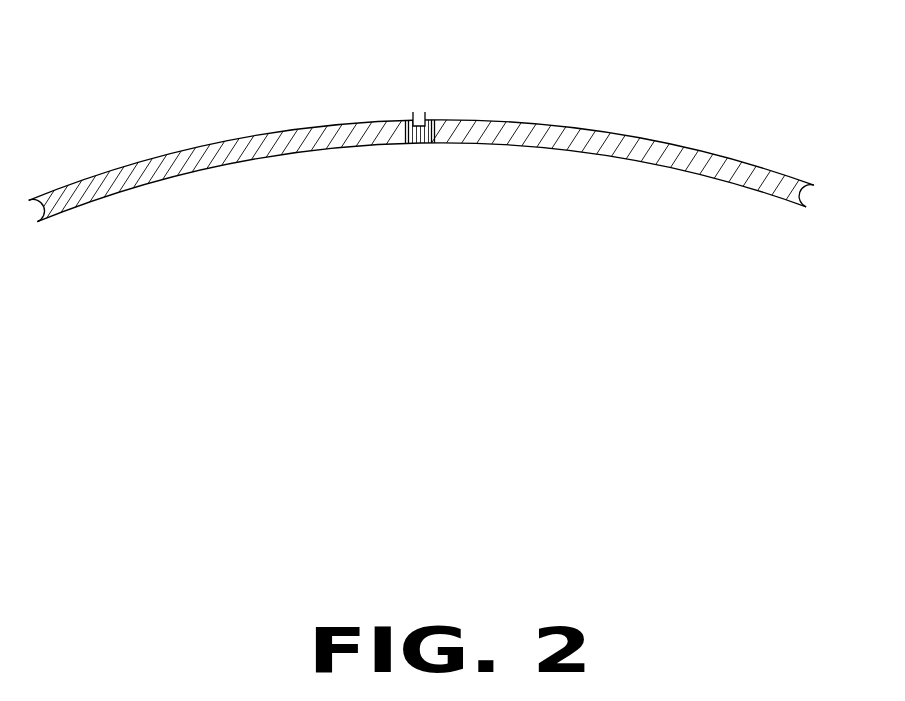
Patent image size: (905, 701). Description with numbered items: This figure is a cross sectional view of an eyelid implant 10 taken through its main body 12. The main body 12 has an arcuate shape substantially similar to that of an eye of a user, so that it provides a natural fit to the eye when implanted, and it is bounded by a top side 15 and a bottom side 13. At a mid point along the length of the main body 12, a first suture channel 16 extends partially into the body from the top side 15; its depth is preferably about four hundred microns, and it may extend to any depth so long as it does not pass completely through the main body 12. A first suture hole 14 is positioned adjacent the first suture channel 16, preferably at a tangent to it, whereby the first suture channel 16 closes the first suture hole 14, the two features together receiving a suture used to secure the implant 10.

The eyelid implant 10 is at (421, 169).
The main body 12 is at (375, 137).
The bottom side 13 is at (645, 167).
The first suture hole 14 is at (422, 143).
The top side 15 is at (555, 125).
The first suture channel 16 is at (417, 120).